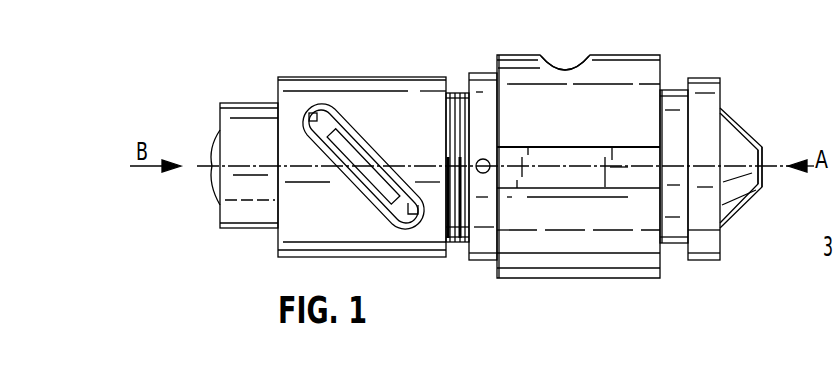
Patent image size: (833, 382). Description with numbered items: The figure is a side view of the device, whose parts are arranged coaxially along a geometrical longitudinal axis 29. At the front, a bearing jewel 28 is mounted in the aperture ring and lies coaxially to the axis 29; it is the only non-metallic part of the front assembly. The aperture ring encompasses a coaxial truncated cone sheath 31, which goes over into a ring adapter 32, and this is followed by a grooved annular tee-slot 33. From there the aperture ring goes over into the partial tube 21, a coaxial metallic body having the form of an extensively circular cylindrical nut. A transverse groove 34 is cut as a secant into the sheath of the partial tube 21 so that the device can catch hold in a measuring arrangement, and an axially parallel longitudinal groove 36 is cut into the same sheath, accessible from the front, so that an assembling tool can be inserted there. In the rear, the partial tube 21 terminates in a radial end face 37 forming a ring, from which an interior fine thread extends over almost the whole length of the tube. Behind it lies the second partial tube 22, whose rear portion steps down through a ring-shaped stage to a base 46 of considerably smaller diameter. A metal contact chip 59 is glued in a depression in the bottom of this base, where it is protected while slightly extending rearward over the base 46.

The partial tube 21 is at (568, 48).
The second partial tube 22 is at (345, 66).
The bearing jewel 28 is at (762, 178).
The geometrical longitudinal axis 29 is at (205, 172).
The truncated cone sheath 31 is at (745, 200).
The ring adapter 32 is at (708, 257).
The grooved annular tee-slot 33 is at (673, 90).
The transverse groove 34 is at (590, 54).
The longitudinal groove 36 is at (622, 183).
The radial end face 37 is at (482, 100).
The base 46 is at (247, 104).
The metal contact chip 59 is at (213, 147).